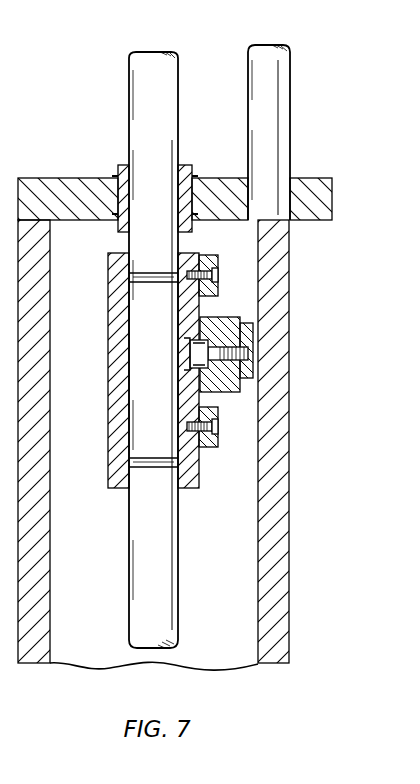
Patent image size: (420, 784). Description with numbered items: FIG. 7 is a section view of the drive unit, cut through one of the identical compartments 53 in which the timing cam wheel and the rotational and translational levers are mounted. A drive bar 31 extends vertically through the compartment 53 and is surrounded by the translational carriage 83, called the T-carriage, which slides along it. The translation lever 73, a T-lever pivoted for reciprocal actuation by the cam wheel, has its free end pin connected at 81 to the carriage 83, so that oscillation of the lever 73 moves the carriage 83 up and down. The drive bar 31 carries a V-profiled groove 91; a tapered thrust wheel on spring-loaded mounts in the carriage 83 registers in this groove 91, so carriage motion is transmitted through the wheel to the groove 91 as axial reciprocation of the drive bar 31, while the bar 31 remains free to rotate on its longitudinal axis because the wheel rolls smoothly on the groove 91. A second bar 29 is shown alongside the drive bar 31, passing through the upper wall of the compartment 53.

The guide rod 29 is at (270, 88).
The drive bar 31 is at (140, 57).
The compartment 53 is at (289, 272).
The translation lever 73 is at (228, 393).
The pin connection 81 is at (206, 318).
The translational carriage 83 is at (108, 383).
The V-profiled groove 91 is at (146, 272).